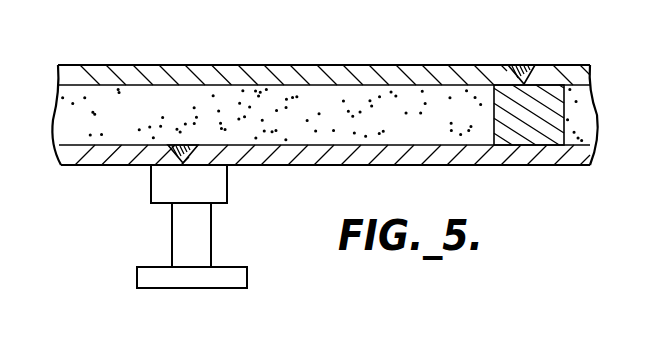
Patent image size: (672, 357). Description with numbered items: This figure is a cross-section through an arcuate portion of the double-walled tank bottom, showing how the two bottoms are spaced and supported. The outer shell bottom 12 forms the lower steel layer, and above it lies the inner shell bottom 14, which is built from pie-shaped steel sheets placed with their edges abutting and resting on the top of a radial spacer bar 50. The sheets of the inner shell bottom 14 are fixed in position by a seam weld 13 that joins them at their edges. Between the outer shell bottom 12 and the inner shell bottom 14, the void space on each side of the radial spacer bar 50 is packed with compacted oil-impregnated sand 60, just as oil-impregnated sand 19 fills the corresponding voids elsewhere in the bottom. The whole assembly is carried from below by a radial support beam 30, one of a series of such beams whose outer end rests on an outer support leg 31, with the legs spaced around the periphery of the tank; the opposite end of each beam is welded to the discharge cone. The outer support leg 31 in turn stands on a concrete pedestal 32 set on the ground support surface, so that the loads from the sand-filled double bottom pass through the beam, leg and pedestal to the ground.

The outer shell bottom 12 is at (533, 157).
The seam weld 13 is at (521, 66).
The inner shell bottom 14 is at (328, 72).
The oil-impregnated sand 19 is at (243, 64).
The radial support beam 30 is at (218, 192).
The outer support leg 31 is at (198, 243).
The concrete pedestal 32 is at (233, 283).
The radial spacer bar 50 is at (543, 100).
The oil-impregnated sand 60 is at (127, 98).